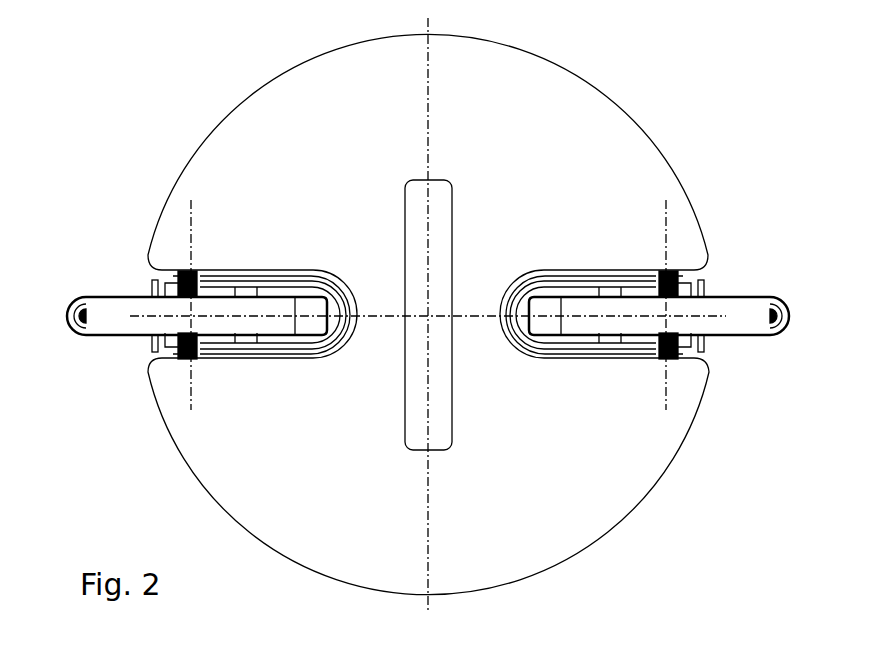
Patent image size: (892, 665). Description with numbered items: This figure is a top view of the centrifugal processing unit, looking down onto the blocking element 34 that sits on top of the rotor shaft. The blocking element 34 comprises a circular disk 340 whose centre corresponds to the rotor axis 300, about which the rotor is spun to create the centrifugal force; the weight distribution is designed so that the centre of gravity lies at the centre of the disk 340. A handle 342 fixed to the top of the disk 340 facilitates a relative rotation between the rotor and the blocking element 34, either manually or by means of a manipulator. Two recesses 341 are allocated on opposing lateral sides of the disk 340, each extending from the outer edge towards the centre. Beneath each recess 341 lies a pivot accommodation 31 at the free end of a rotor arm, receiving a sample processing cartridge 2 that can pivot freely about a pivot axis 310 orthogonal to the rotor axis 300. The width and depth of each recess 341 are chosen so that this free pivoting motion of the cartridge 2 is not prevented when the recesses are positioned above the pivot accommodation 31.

The sample processing cartridge 2 is at (113, 312).
The pivot accommodation 31 is at (222, 249).
The blocking element 34 is at (429, 314).
The rotor axis 300 is at (428, 317).
The pivot axis 310 is at (191, 238).
The circular disk 340 is at (357, 130).
The recess 341 is at (259, 358).
The handle 342 is at (405, 400).